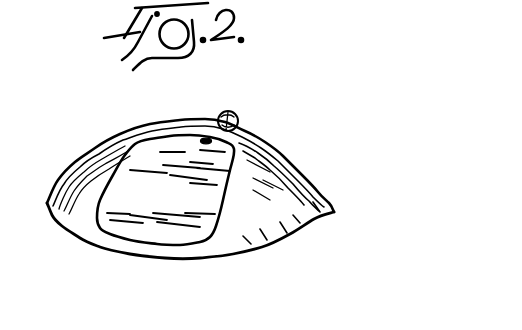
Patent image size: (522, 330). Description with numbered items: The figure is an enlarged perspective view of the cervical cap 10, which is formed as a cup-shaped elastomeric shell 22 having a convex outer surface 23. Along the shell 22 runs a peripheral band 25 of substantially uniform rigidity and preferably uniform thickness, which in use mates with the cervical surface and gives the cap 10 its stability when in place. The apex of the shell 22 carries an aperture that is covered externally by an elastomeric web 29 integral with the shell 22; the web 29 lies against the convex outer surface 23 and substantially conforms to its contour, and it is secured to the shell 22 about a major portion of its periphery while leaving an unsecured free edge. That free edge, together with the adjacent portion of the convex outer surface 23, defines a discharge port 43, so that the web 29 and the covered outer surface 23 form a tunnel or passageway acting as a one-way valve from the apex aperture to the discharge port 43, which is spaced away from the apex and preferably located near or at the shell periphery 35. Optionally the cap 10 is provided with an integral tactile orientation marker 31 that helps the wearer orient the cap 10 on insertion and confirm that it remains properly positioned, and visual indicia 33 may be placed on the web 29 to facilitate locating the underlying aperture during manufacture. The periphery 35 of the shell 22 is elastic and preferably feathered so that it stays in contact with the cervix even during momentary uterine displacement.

The cap 10 is at (294, 117).
The elastomeric shell 22 is at (117, 144).
The convex outer surface 23 is at (93, 172).
The band 25 is at (287, 177).
The elastomeric web 29 is at (192, 198).
The tactile orientation marker 31 is at (220, 114).
The visual indicia 33 is at (201, 138).
The periphery 35 is at (102, 244).
The discharge port 43 is at (162, 241).